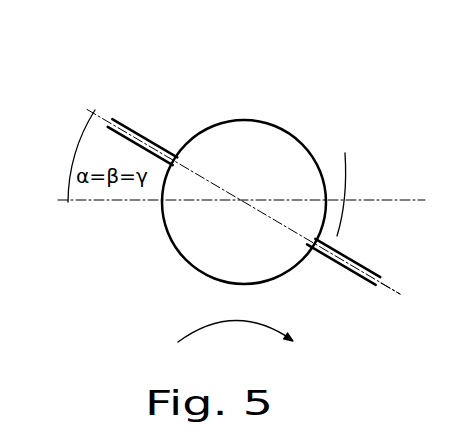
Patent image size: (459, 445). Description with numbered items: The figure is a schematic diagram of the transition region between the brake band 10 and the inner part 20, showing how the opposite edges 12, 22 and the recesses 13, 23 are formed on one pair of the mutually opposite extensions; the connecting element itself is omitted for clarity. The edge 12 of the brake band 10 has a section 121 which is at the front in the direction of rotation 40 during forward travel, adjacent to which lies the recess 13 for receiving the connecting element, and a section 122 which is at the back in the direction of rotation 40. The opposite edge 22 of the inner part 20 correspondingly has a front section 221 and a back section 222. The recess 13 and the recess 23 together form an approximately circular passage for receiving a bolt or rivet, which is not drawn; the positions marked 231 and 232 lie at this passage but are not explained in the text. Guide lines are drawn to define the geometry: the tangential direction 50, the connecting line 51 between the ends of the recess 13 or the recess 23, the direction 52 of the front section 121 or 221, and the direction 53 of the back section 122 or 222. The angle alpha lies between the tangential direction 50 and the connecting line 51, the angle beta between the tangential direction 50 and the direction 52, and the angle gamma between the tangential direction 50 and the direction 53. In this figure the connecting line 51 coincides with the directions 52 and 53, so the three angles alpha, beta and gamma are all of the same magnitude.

The brake band 10 is at (312, 114).
The edge 12 is at (345, 157).
The recess 13 is at (242, 118).
The inner part 20 is at (172, 301).
The edge 22 is at (313, 259).
The recess 23 is at (178, 253).
The direction of rotation 40 is at (225, 321).
The tangential direction 50 is at (374, 200).
The connecting line 51 is at (385, 286).
The direction of the front section 52 is at (95, 110).
The direction of the back section 53 is at (216, 184).
The front section 121 is at (352, 254).
The back section 122 is at (134, 132).
The front section 221 is at (345, 270).
The back section 222 is at (161, 158).
The first blade root 231 is at (307, 243).
The second blade root 232 is at (175, 162).